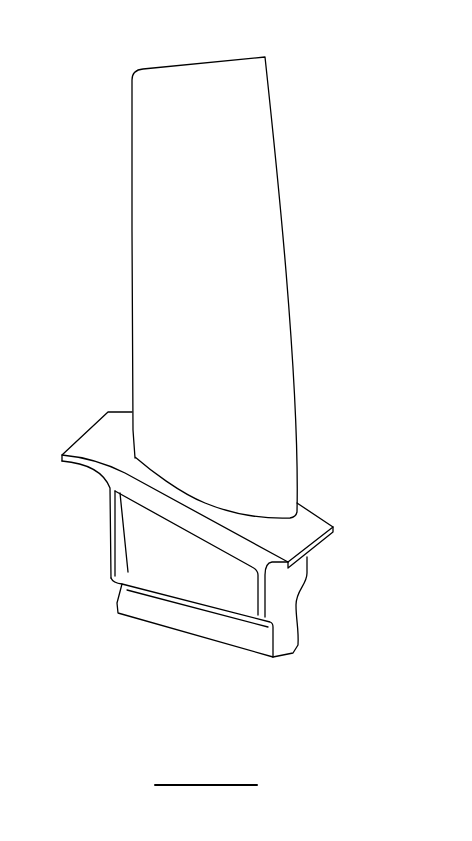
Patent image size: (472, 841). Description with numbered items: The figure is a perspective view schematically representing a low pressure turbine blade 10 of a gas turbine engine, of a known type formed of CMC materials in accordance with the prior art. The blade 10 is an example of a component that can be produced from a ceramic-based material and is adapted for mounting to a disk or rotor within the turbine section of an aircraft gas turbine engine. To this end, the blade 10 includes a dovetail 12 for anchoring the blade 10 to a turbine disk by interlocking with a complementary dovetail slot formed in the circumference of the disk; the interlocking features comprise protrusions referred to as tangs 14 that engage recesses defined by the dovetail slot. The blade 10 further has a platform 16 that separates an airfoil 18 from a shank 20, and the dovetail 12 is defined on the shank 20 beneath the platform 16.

The low pressure turbine blade 10 is at (343, 158).
The dovetail 12 is at (287, 630).
The tangs 14 is at (210, 632).
The platform 16 is at (312, 523).
The airfoil 18 is at (275, 282).
The shank 20 is at (142, 563).